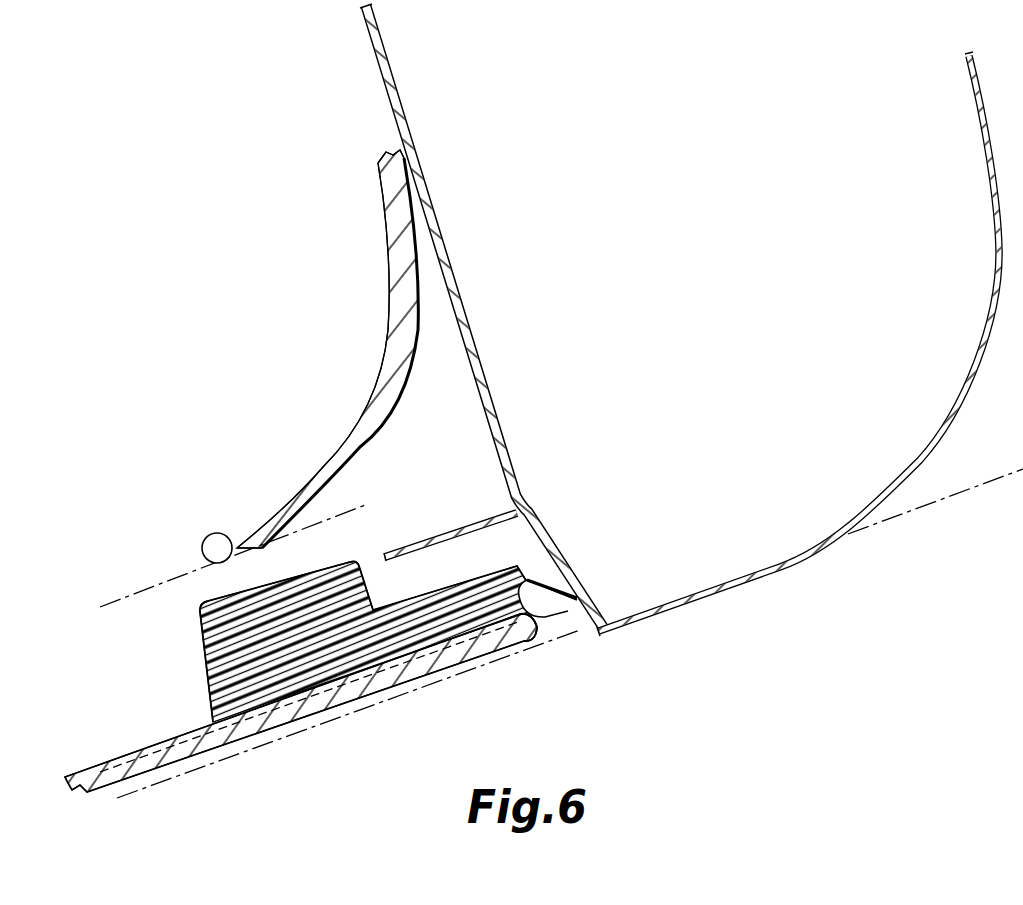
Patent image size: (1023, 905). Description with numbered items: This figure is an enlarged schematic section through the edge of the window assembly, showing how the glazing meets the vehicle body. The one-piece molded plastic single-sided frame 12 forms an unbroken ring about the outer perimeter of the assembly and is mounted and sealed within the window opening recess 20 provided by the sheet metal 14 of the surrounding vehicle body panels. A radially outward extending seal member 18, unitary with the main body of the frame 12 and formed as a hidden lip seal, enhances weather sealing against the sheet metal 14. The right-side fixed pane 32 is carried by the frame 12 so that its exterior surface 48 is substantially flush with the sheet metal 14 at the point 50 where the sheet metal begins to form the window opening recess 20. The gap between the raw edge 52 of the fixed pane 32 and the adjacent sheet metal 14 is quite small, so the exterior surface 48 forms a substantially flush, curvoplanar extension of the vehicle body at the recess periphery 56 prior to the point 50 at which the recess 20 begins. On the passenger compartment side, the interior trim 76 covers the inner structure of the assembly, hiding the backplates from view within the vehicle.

The frame 12 is at (462, 625).
The sheet metal 14 is at (455, 537).
The seal member 18 is at (566, 600).
The window opening recess 20 is at (588, 603).
The right-side fixed pane 32 is at (186, 738).
The exterior surface 48 is at (298, 718).
The point 50 is at (598, 633).
The raw edge 52 is at (546, 636).
The recess periphery 56 is at (672, 613).
The interior trim 76 is at (388, 328).